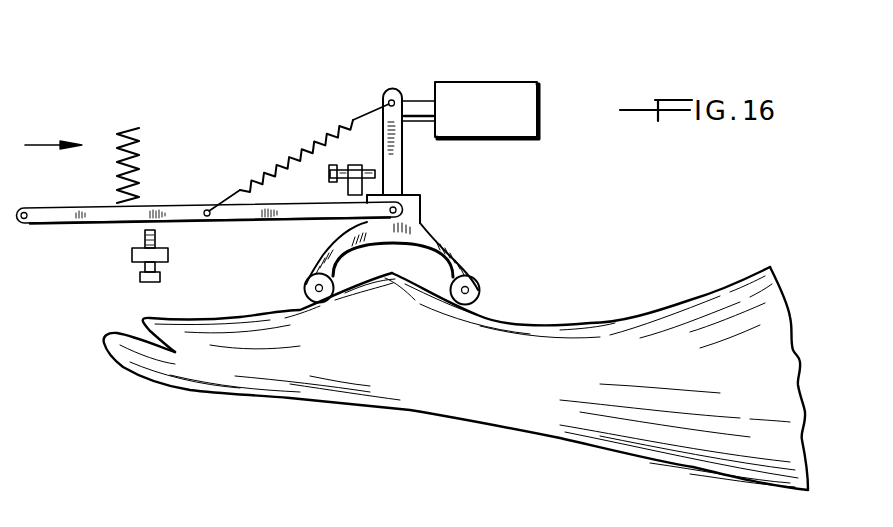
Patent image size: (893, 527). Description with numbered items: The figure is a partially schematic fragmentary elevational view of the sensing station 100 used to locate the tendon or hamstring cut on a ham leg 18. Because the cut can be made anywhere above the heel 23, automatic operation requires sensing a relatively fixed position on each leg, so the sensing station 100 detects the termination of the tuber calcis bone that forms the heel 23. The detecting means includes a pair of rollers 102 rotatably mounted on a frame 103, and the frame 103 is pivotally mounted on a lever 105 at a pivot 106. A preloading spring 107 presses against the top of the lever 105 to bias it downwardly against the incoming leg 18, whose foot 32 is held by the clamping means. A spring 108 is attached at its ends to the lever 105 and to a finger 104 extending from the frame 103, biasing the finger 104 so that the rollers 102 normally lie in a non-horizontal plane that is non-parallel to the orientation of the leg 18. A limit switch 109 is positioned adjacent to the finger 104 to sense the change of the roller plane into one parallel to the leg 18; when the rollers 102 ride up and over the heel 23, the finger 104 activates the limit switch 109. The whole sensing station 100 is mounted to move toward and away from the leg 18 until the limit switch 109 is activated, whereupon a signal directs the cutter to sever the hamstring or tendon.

The ham leg 18 is at (627, 423).
The heel 23 is at (394, 274).
The foot 32 is at (277, 384).
The sensing station 100 is at (55, 252).
The rollers 102 is at (483, 297).
The frame 103 is at (465, 253).
The finger 104 is at (403, 155).
The lever 105 is at (183, 218).
The pivot 106 is at (400, 211).
The preloading spring 107 is at (118, 135).
The spring 108 is at (300, 148).
The limit switch 109 is at (418, 100).